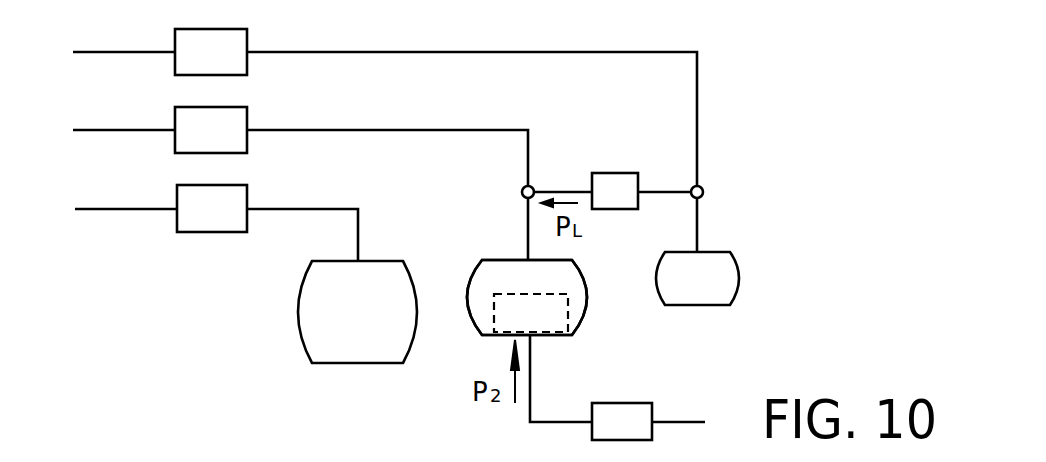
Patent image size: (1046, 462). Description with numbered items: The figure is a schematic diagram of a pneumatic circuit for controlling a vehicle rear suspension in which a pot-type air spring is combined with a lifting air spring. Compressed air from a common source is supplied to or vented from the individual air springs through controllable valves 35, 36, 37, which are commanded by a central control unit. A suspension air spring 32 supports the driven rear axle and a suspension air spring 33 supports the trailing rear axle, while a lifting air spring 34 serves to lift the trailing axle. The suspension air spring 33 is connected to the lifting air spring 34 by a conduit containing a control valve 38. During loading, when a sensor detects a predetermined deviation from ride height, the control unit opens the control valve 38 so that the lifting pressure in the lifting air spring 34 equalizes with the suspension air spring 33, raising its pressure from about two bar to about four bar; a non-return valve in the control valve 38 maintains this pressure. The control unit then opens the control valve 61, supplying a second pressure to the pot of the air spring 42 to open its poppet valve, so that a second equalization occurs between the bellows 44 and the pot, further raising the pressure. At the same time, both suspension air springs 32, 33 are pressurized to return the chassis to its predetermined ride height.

The suspension air spring 32 is at (313, 333).
The suspension air spring 33 is at (548, 310).
The lifting air spring 34 is at (732, 278).
The controllable valve 35 is at (195, 232).
The controllable valve 36 is at (193, 153).
The controllable valve 37 is at (193, 75).
The control valve 38 is at (640, 177).
The air spring 42 is at (470, 318).
The bellows 44 is at (505, 270).
The control valve 61 is at (643, 408).